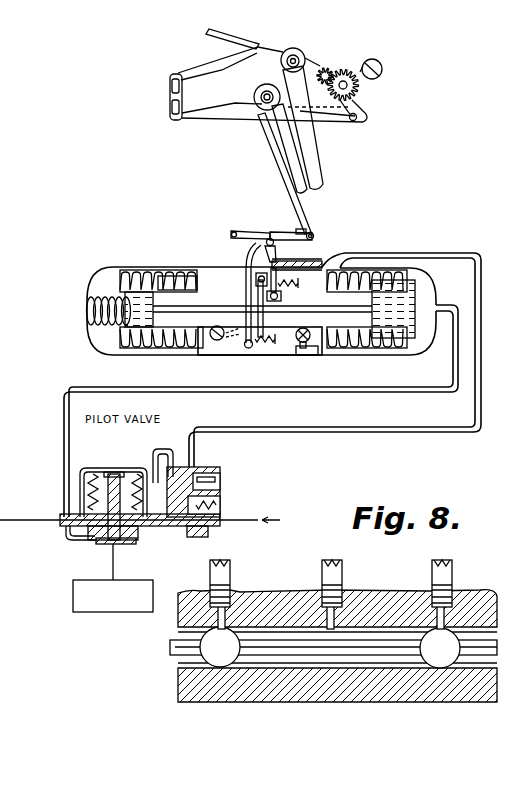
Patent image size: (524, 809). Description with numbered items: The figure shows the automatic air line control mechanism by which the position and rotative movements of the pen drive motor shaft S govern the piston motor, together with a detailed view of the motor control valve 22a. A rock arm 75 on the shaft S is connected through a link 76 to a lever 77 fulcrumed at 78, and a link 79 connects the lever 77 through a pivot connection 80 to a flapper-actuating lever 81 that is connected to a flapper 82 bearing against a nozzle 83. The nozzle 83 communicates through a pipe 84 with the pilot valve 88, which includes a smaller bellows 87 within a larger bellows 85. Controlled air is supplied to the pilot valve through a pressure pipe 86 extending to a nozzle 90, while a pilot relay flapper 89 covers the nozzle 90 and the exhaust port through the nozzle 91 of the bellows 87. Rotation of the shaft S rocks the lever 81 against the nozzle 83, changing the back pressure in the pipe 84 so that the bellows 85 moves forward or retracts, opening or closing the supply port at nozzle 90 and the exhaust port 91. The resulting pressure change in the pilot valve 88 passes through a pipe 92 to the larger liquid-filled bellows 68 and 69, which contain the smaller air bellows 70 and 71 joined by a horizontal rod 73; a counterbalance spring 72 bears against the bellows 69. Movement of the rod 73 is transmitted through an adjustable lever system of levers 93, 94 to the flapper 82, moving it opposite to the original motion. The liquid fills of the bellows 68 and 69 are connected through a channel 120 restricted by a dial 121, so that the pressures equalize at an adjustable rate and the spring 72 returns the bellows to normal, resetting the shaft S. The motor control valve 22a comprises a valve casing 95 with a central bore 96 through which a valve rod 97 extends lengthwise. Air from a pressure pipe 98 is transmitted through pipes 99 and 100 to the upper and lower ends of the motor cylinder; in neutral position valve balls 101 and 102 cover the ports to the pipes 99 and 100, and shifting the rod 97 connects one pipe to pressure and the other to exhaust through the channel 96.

The pen drive motor shaft S is at (244, 40).
The rock arm 75 is at (222, 63).
The link 76 is at (172, 99).
The lever 77 is at (228, 117).
The fulcrum 78 is at (357, 118).
The link 79 is at (285, 186).
The link 80 is at (314, 235).
The flapper-actuating lever 81 is at (275, 221).
The flapper 82 is at (252, 270).
The nozzle 83 is at (290, 261).
The pipe 84 is at (483, 327).
The pipe 92 is at (178, 391).
The bellows 68 is at (393, 272).
The bellows 69 is at (140, 275).
The air bellows 70 is at (352, 289).
The air bellows 71 is at (172, 290).
The counterbalance spring 72 is at (98, 296).
The rod 73 is at (320, 307).
The lever 93 is at (258, 298).
The lever 94 is at (246, 282).
The channel 120 is at (272, 357).
The dial 121 is at (302, 329).
The larger bellows 85 is at (136, 467).
The pressure pipe 86 is at (240, 519).
The smaller bellows 87 is at (92, 500).
The pilot valve 88 is at (94, 458).
The pilot relay flapper 89 is at (110, 541).
The nozzle 90 is at (148, 536).
The nozzle 91 is at (92, 542).
The motor control valve 22a is at (281, 585).
The valve casing 95 is at (192, 682).
The central bore 96 is at (193, 633).
The valve rod 97 is at (182, 647).
The pressure pipe 98 is at (336, 568).
The pipe 99 is at (213, 574).
The pipe 100 is at (446, 566).
The valve ball 101 is at (222, 655).
The valve ball 102 is at (443, 655).